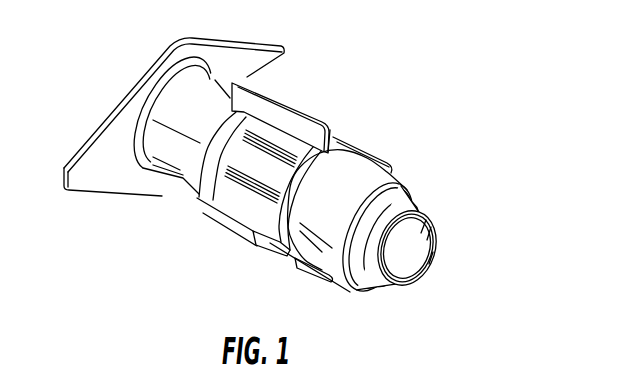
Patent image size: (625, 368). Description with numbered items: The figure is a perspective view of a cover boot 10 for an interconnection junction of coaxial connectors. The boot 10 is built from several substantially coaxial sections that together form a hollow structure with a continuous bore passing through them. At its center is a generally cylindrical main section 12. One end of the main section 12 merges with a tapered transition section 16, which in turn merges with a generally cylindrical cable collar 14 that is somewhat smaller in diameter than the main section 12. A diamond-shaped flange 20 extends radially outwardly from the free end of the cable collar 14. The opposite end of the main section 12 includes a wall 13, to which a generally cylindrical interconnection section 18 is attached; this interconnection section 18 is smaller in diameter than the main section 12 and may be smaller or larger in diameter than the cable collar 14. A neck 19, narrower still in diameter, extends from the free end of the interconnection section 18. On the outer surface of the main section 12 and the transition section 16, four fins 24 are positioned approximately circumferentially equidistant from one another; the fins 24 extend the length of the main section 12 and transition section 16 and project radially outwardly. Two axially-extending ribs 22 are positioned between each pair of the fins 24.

The cover boot 10 is at (450, 75).
The main section 12 is at (330, 133).
The wall 13 is at (360, 133).
The cable collar 14 is at (180, 160).
The transition section 16 is at (212, 162).
The interconnection section 18 is at (377, 178).
The neck 19 is at (425, 207).
The flange 20 is at (268, 62).
The ribs 22 is at (243, 180).
The fins 24 is at (253, 230).